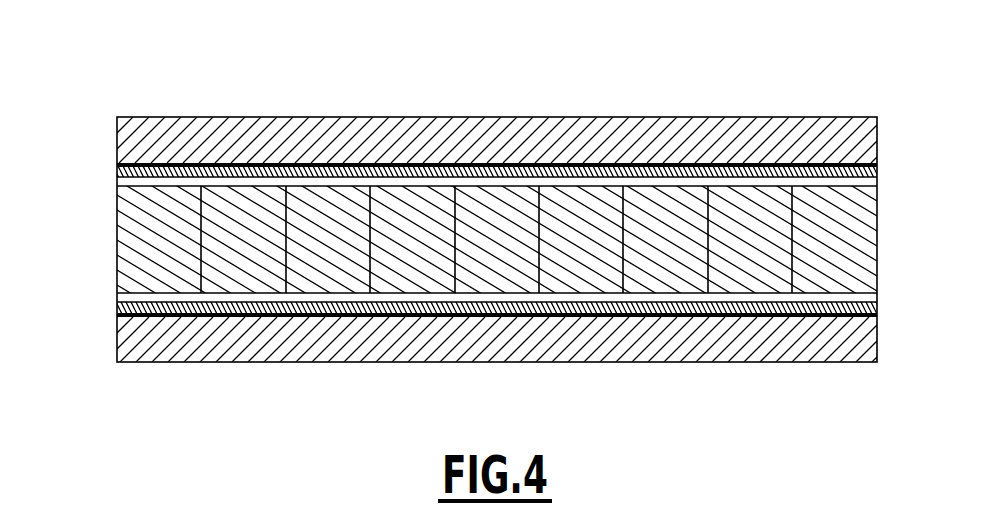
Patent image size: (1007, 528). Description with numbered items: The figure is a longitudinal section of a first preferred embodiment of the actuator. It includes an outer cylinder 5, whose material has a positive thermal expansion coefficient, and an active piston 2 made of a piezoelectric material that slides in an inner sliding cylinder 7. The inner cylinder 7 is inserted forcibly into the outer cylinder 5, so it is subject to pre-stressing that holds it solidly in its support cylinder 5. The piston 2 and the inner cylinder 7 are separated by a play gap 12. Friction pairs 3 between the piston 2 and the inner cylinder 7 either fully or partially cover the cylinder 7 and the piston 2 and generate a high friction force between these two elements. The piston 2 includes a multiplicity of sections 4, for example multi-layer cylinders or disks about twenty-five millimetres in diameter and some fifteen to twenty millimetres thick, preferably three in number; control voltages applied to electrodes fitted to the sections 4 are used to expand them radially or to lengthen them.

The active piston 2 is at (160, 235).
The friction pairs 3 is at (229, 188).
The sections 4 is at (820, 272).
The outer cylinder 5 is at (318, 122).
The inner sliding cylinder 7 is at (749, 166).
The play gap 12 is at (868, 178).